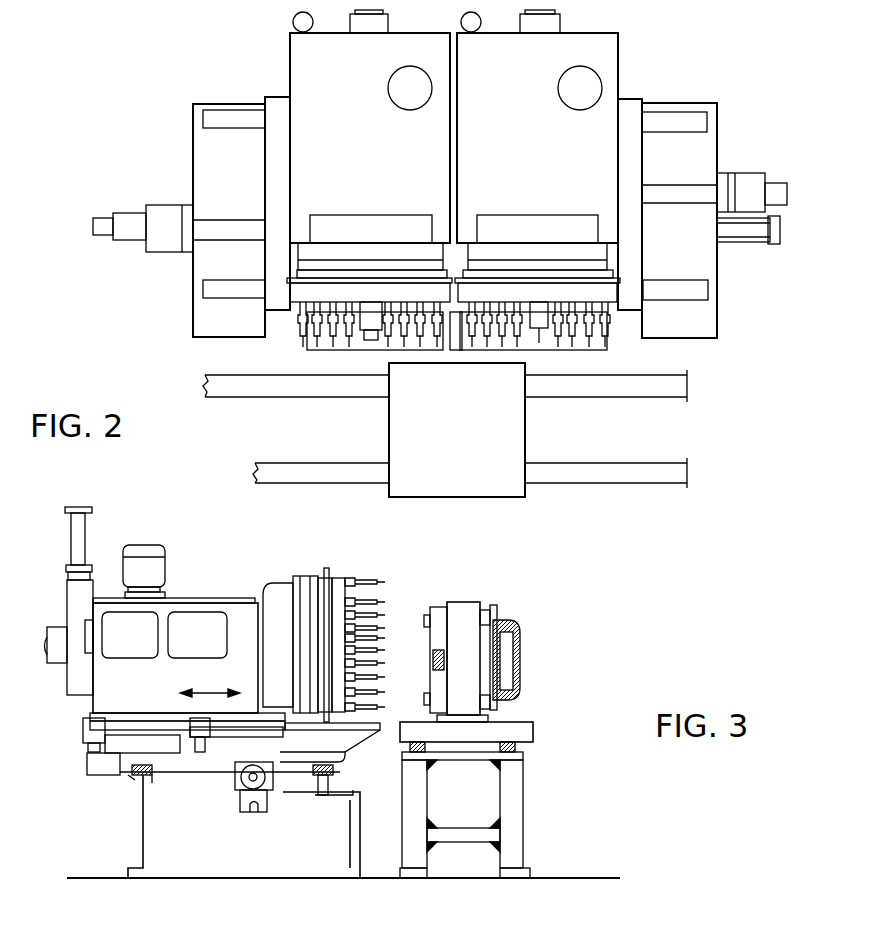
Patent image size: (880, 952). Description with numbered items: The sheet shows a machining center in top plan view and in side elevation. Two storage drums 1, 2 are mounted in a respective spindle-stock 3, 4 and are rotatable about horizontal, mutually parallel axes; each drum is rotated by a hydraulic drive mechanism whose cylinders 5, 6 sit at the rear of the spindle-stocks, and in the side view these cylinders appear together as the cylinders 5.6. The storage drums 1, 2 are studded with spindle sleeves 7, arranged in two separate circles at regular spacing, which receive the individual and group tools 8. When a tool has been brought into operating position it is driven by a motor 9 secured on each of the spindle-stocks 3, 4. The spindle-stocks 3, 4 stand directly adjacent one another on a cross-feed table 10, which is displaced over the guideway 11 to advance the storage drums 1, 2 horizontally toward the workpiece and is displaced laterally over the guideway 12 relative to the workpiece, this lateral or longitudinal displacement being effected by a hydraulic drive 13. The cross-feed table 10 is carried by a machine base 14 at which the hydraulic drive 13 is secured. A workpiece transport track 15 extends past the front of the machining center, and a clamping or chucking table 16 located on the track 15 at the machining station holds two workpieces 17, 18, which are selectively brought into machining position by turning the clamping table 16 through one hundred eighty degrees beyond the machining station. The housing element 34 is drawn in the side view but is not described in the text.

In FIG. 2, the storage drum 1 is at (290, 288).
In FIG. 3, the storage drum 1 is at (326, 572).
In FIG. 2, the storage drum 2 is at (607, 295).
In FIG. 2, the spindle-stock 3 is at (297, 58).
In FIG. 2, the spindle-stock 4 is at (612, 63).
In FIG. 2, the cylinder 5 is at (305, 18).
In FIG. 2, the cylinder 6 is at (465, 18).
In FIG. 3, the cylinders 5.6 is at (75, 525).
In FIG. 2, the spindle sleeves 7 is at (293, 312).
In FIG. 3, the spindle sleeves 7 is at (352, 578).
In FIG. 2, the tools 8 is at (300, 340).
In FIG. 3, the tools 8 is at (372, 578).
In FIG. 2, the motor 9 is at (405, 88).
In FIG. 3, the motor 9 is at (142, 560).
In FIG. 2, the cross-feed table 10 is at (265, 200).
In FIG. 3, the cross-feed table 10 is at (125, 743).
In FIG. 3, the guideway 11 is at (368, 732).
In FIG. 2, the guideway 12 is at (237, 118).
In FIG. 3, the guideway 12 is at (135, 777).
In FIG. 2, the hydraulic drive 13 is at (757, 240).
In FIG. 2, the machine base 14 is at (200, 150).
In FIG. 3, the machine base 14 is at (158, 832).
In FIG. 2, the workpiece transport track 15 is at (625, 483).
In FIG. 3, the workpiece transport track 15 is at (513, 803).
In FIG. 2, the clamping table 16 is at (500, 497).
In FIG. 3, the clamping table 16 is at (465, 612).
In FIG. 3, the workpiece 17 is at (440, 605).
In FIG. 3, the workpiece 18 is at (508, 622).
In FIG. 3, the drive housing 34 is at (205, 605).